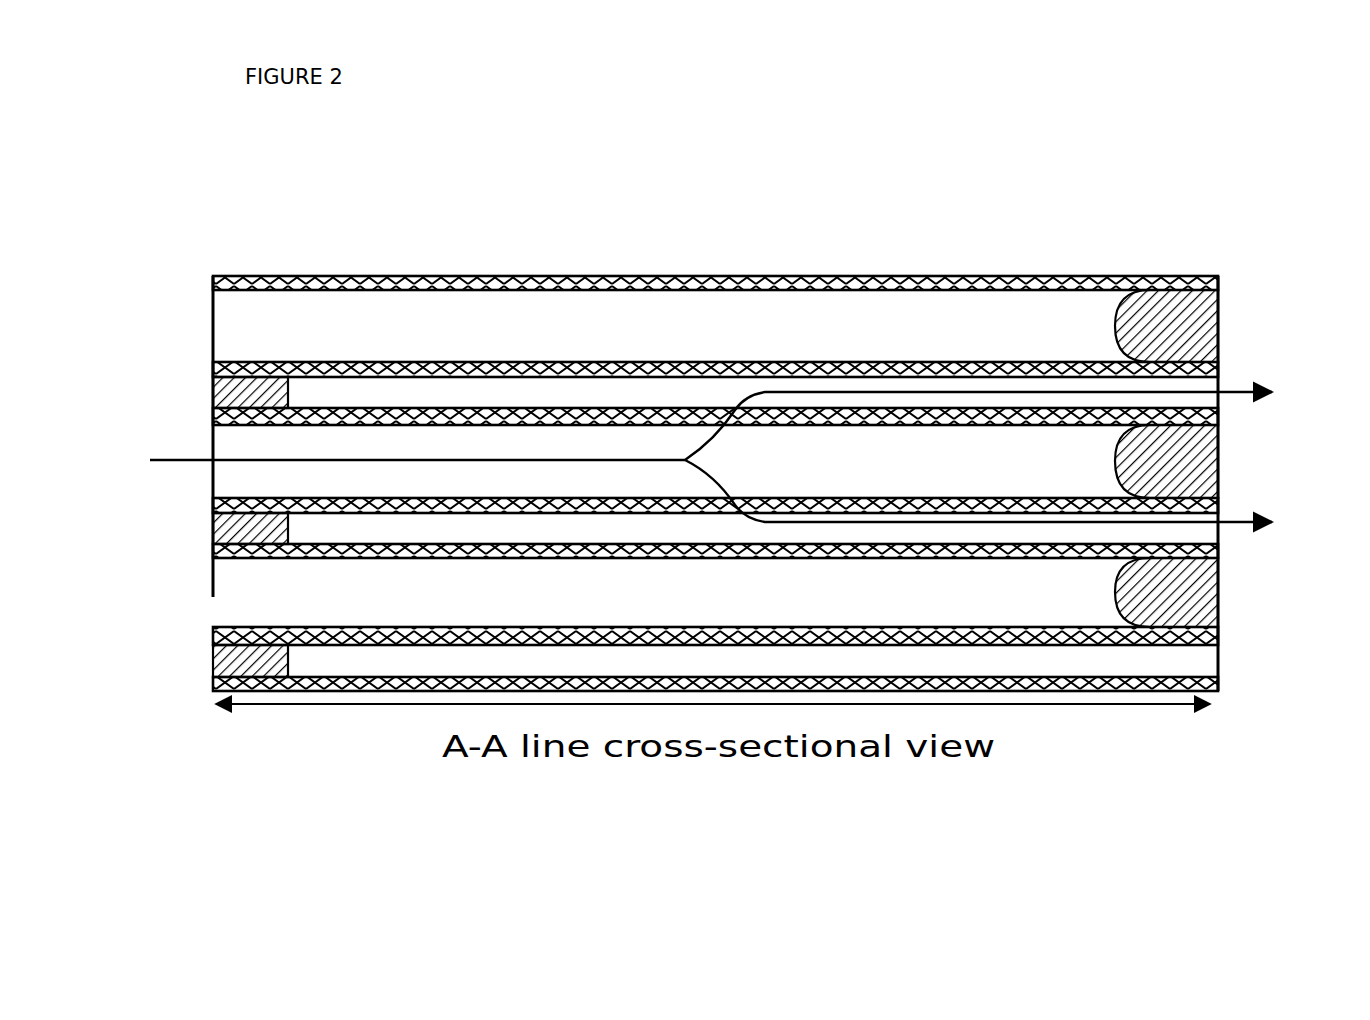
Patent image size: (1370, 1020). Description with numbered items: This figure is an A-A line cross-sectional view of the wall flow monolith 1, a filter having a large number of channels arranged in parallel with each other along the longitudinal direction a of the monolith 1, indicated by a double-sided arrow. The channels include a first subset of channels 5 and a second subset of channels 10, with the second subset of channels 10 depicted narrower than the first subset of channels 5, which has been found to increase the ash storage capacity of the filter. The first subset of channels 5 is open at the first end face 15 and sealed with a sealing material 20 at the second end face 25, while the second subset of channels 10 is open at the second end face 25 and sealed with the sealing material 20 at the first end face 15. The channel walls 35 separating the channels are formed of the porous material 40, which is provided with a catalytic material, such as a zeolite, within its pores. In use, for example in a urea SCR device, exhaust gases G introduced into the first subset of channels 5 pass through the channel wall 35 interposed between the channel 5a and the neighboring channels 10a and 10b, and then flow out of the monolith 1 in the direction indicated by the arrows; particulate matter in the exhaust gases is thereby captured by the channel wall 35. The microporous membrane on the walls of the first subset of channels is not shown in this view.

The wall flow monolith 1 is at (540, 242).
The first end face 15 is at (190, 288).
The second end face 25 is at (1244, 292).
The first subset of channels 5 is at (245, 319).
The channel 5a is at (213, 473).
The porous material 40 is at (893, 277).
The channel wall 35 is at (705, 366).
The sealing material 20 is at (214, 388).
The exhaust gases G is at (405, 459).
The channel 10a is at (1218, 402).
The channel 10b is at (1205, 529).
The second subset of channels 10 is at (1194, 659).
The longitudinal direction a is at (286, 710).